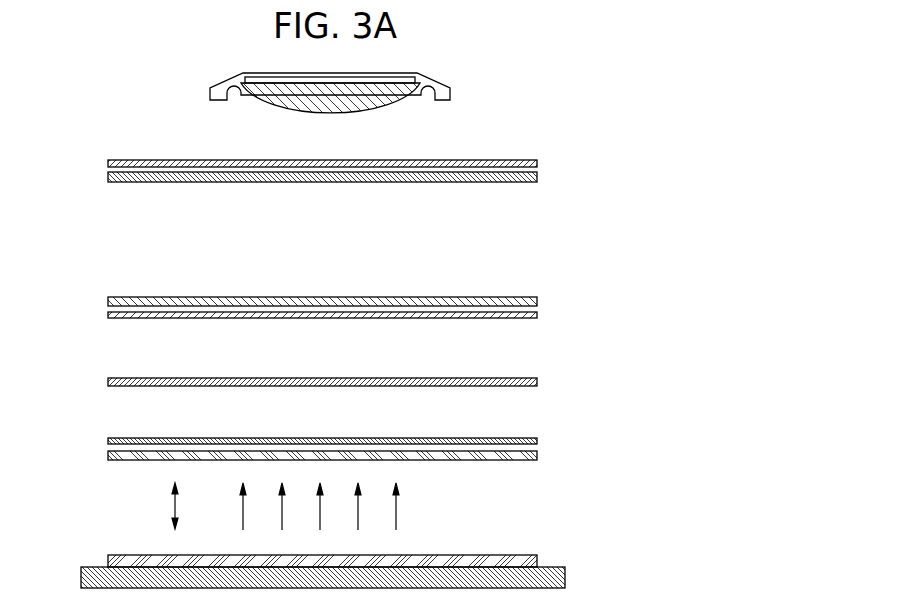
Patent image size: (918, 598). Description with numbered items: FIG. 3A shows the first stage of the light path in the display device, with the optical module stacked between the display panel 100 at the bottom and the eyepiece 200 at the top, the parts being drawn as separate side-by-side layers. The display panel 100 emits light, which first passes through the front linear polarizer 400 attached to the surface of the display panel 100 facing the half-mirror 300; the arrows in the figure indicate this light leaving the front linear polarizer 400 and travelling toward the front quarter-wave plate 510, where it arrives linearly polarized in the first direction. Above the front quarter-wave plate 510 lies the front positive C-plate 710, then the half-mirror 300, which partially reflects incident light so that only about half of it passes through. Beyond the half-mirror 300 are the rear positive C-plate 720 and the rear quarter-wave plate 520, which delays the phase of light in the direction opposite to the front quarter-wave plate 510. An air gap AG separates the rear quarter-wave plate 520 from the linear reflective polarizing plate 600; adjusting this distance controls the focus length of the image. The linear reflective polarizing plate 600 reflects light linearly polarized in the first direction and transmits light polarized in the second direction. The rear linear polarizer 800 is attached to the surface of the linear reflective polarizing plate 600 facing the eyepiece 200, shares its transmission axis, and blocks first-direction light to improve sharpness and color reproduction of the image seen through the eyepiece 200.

The eyepiece 200 is at (418, 98).
The rear linear polarizer 800 is at (538, 163).
The linear reflective polarizing plate 600 is at (538, 178).
The air gap AG is at (136, 189).
The rear quarter-wave plate 520 is at (538, 301).
The rear positive C-plate 720 is at (107, 315).
The half-mirror 300 is at (538, 382).
The front positive C-plate 710 is at (107, 441).
The front quarter-wave plate 510 is at (538, 455).
The front linear polarizer 400 is at (538, 562).
The display panel 100 is at (566, 577).